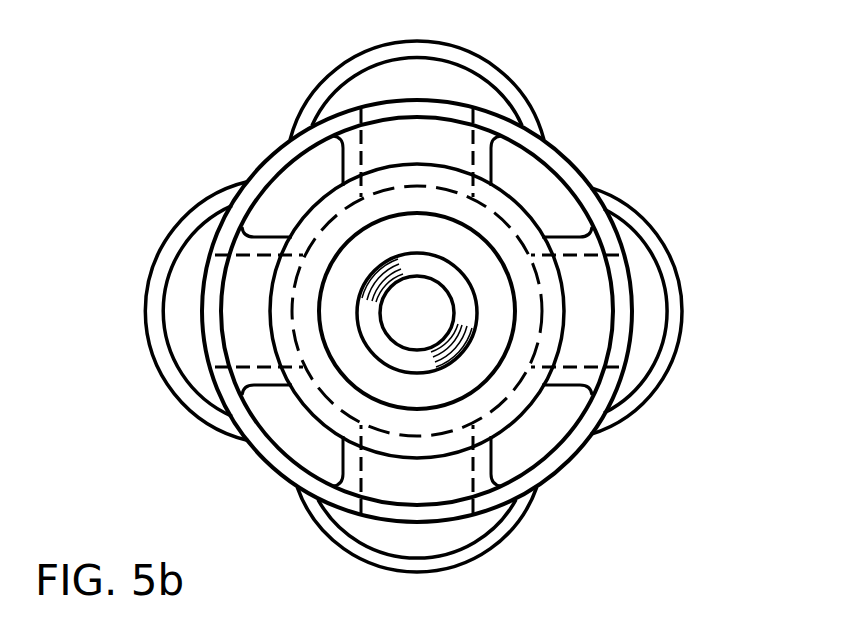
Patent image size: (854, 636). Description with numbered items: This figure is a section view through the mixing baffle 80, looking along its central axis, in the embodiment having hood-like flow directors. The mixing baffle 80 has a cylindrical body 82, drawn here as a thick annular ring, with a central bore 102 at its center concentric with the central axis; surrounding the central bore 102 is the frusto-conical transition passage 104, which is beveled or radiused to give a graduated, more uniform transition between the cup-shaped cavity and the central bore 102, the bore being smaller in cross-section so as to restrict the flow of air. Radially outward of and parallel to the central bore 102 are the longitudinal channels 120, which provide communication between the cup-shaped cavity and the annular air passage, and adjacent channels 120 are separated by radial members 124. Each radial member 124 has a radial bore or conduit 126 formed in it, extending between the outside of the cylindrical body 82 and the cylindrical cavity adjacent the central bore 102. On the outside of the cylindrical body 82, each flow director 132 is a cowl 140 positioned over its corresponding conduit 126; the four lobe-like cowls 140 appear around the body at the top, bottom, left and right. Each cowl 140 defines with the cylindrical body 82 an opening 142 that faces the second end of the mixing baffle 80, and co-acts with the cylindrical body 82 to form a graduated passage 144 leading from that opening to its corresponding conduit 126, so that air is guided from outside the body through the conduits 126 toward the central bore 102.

The mixing baffle 80 is at (216, 88).
The cylindrical body 82 is at (237, 188).
The central bore 102 is at (443, 325).
The frusto-conical transition passage 104 is at (450, 280).
The longitudinal channels 120 is at (318, 162).
The radial members 124 is at (490, 162).
The radial bores or conduits 126 is at (398, 485).
The flow director 132 is at (538, 80).
The cowl 140 is at (178, 386).
The opening 142 is at (374, 84).
The graduated passage 144 is at (178, 303).